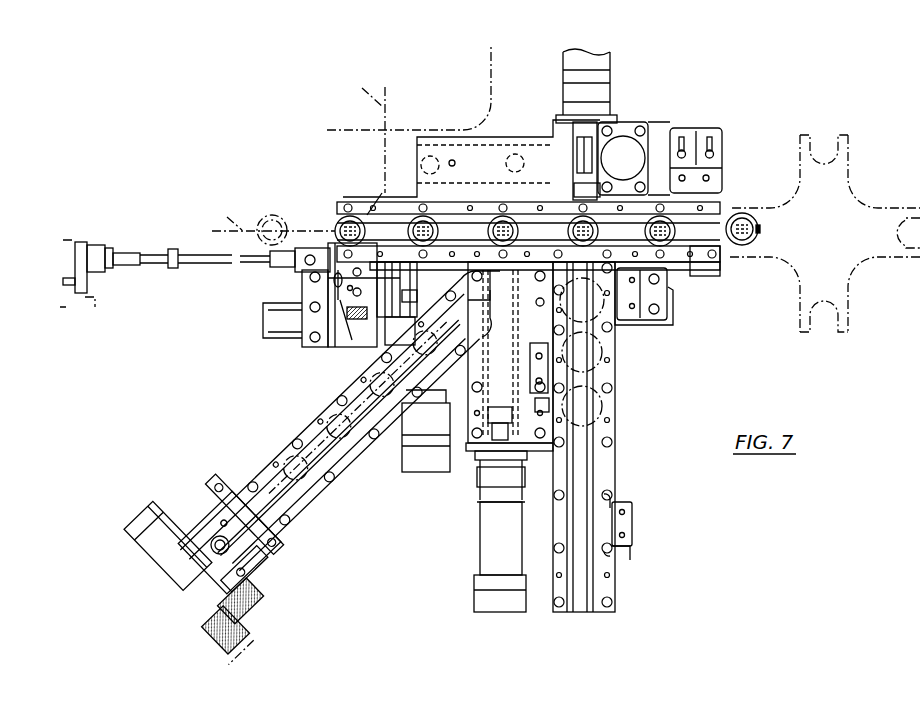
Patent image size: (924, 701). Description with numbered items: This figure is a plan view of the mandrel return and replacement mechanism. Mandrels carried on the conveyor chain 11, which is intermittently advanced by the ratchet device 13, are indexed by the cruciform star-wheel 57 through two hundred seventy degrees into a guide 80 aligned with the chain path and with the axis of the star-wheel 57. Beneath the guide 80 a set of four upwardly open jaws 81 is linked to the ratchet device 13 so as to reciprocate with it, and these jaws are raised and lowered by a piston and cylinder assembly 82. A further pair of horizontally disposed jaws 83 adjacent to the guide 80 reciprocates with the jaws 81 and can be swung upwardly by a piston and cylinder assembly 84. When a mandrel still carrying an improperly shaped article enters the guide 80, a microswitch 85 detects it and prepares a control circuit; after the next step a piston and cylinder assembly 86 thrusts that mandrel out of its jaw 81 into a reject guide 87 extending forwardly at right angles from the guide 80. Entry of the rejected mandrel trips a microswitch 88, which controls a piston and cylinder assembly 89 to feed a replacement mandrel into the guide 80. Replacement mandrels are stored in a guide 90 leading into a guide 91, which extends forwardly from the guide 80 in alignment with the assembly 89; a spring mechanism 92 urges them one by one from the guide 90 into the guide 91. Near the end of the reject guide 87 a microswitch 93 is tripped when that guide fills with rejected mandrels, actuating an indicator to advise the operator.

The chain 11 is at (300, 150).
The ratchet device 13 is at (82, 246).
The cruciform star-wheel 57 is at (838, 192).
The guide 80 is at (700, 240).
The upwardly open jaws 81 is at (528, 198).
The piston and cylinder assembly 82 is at (621, 145).
The horizontally disposed jaws 83 is at (333, 224).
The piston and cylinder assembly 84 is at (410, 466).
The microswitch 85 is at (719, 178).
The piston and cylinder assembly 86 is at (604, 88).
The reject guide 87 is at (602, 466).
The microswitch 88 is at (656, 311).
The piston and cylinder assembly 89 is at (490, 536).
The guide 90 is at (307, 428).
The guide 91 is at (505, 268).
The spring mechanism 92 is at (262, 586).
The microswitch 93 is at (625, 544).